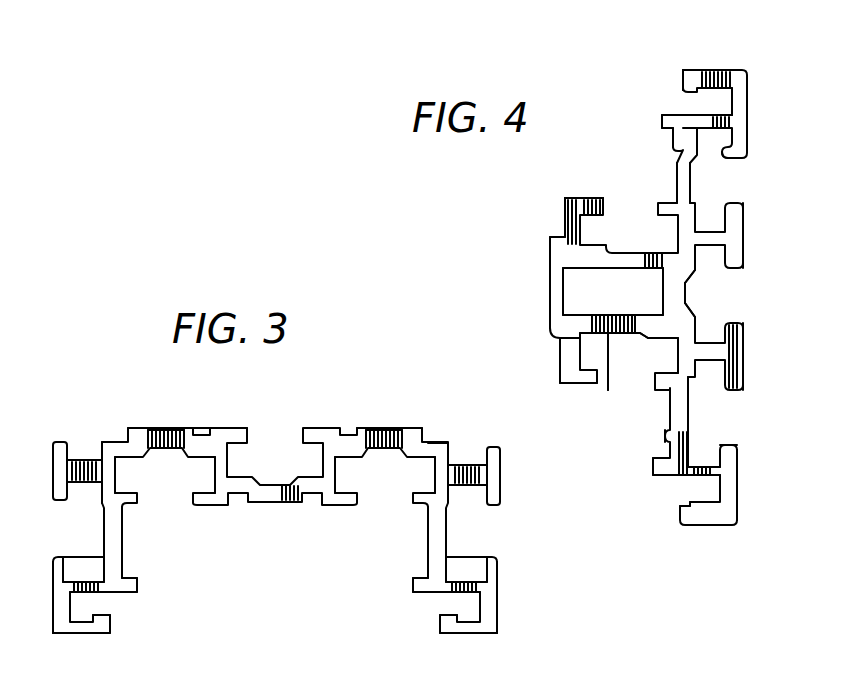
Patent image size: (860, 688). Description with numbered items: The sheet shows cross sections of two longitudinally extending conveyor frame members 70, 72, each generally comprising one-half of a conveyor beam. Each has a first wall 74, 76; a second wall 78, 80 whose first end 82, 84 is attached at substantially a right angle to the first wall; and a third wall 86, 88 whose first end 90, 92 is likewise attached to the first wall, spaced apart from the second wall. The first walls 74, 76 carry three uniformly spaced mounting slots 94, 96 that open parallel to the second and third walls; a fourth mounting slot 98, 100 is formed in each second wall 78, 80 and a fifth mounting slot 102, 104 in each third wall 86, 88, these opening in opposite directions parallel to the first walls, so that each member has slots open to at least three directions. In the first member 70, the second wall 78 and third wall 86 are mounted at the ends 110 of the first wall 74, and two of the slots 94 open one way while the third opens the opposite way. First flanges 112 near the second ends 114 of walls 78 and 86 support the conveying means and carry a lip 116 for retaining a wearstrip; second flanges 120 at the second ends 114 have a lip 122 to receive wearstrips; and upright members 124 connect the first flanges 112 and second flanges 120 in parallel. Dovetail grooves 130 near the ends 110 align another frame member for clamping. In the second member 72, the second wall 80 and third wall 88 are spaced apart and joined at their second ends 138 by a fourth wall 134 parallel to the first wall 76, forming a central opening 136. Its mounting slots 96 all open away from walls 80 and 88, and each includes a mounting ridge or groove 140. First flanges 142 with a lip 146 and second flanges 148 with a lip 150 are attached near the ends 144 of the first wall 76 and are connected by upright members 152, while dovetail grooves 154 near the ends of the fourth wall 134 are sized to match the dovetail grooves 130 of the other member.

In FIG. 3, the frame member 70 is at (196, 428).
In FIG. 4, the frame member 72 is at (540, 286).
In FIG. 3, the first wall 74 is at (272, 508).
In FIG. 4, the first wall 76 is at (672, 293).
In FIG. 3, the second wall 78 is at (432, 550).
In FIG. 4, the second wall 80 is at (608, 381).
In FIG. 3, the first end 82 is at (447, 448).
In FIG. 4, the first end 84 is at (697, 313).
In FIG. 3, the third wall 86 is at (117, 528).
In FIG. 4, the third wall 88 is at (607, 207).
In FIG. 3, the first end 90 is at (128, 440).
In FIG. 4, the first end 92 is at (698, 287).
In FIG. 3, the mounting slots 94 is at (272, 445).
In FIG. 4, the mounting slots 96 is at (716, 183).
In FIG. 3, the fourth mounting slot 98 is at (470, 530).
In FIG. 4, the fourth mounting slot 100 is at (623, 365).
In FIG. 3, the fifth mounting slot 102 is at (86, 518).
In FIG. 4, the fifth mounting slot 104 is at (628, 228).
In FIG. 3, the ends 110 is at (128, 432).
In FIG. 3, the first flanges 112 is at (86, 634).
In FIG. 3, the second ends 114 is at (102, 575).
In FIG. 3, the lip 116 is at (107, 620).
In FIG. 3, the second flanges 120 is at (100, 588).
In FIG. 3, the lip 122 is at (136, 575).
In FIG. 3, the upright members 124 is at (58, 597).
In FIG. 3, the dovetail grooves 130 is at (165, 430).
In FIG. 4, the fourth wall 134 is at (560, 305).
In FIG. 4, the central opening 136 is at (612, 304).
In FIG. 4, the second ends 138 is at (580, 257).
In FIG. 4, the mounting ridge or groove 140 is at (740, 160).
In FIG. 4, the first flanges 142 is at (721, 70).
In FIG. 4, the ends 144 is at (672, 148).
In FIG. 4, the lip 146 is at (686, 86).
In FIG. 4, the second flanges 148 is at (690, 114).
In FIG. 4, the lip 150 is at (660, 120).
In FIG. 4, the upright members 152 is at (738, 95).
In FIG. 4, the dovetail grooves 154 is at (558, 237).